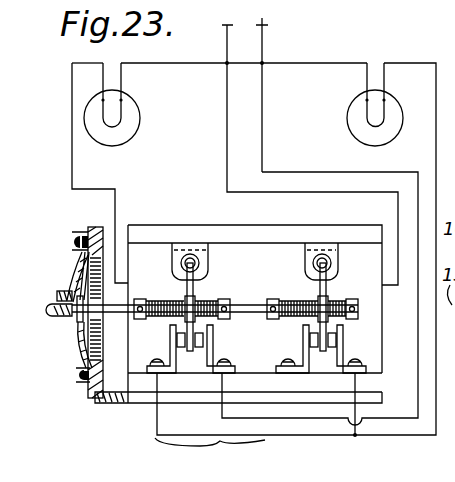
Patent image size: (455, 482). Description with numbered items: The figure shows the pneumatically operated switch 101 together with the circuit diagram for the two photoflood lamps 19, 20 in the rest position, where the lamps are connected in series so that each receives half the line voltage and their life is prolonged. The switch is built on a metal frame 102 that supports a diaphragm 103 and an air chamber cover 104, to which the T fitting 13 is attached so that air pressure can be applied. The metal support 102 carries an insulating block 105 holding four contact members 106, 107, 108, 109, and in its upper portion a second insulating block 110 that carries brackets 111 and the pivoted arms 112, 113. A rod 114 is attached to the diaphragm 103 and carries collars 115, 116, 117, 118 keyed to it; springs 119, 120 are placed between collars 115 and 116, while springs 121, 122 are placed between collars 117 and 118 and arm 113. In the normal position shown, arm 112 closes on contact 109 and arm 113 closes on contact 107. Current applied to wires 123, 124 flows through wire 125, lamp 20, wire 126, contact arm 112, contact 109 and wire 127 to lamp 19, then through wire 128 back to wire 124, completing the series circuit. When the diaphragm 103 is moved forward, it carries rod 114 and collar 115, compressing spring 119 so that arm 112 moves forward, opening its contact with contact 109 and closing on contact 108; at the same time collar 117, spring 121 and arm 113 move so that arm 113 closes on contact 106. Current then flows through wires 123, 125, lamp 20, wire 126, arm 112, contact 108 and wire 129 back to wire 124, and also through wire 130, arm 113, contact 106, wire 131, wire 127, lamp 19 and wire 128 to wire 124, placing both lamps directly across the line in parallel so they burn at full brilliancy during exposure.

The T fitting 13 is at (55, 318).
The lamp 19 is at (388, 128).
The lamp 20 is at (125, 128).
The pneumatically operated switch 101 is at (210, 456).
The metal frame 102 is at (118, 397).
The diaphragm 103 is at (78, 265).
The air chamber cover 104 is at (118, 317).
The insulating block 105 is at (143, 383).
The contact member 106 is at (353, 348).
The contact member 107 is at (303, 348).
The contact member 108 is at (217, 343).
The contact member 109 is at (165, 352).
The second insulating block 110 is at (163, 230).
The bracket 111 is at (212, 240).
The pivoted arm 112 is at (195, 290).
The pivoted arm 113 is at (318, 296).
The rod 114 is at (78, 362).
The collar 115 is at (150, 300).
The collar 116 is at (230, 305).
The collar 117 is at (276, 299).
The collar 118 is at (360, 308).
The spring 119 is at (170, 337).
The spring 120 is at (205, 301).
The spring 121 is at (290, 330).
The spring 122 is at (335, 300).
The wire 123 is at (227, 47).
The wire 124 is at (268, 43).
The wire 125 is at (182, 65).
The wire 126 is at (72, 163).
The wire 127 is at (416, 55).
The wire 128 is at (316, 65).
The wire 129 is at (312, 172).
The wire 130 is at (297, 192).
The wire 131 is at (362, 416).